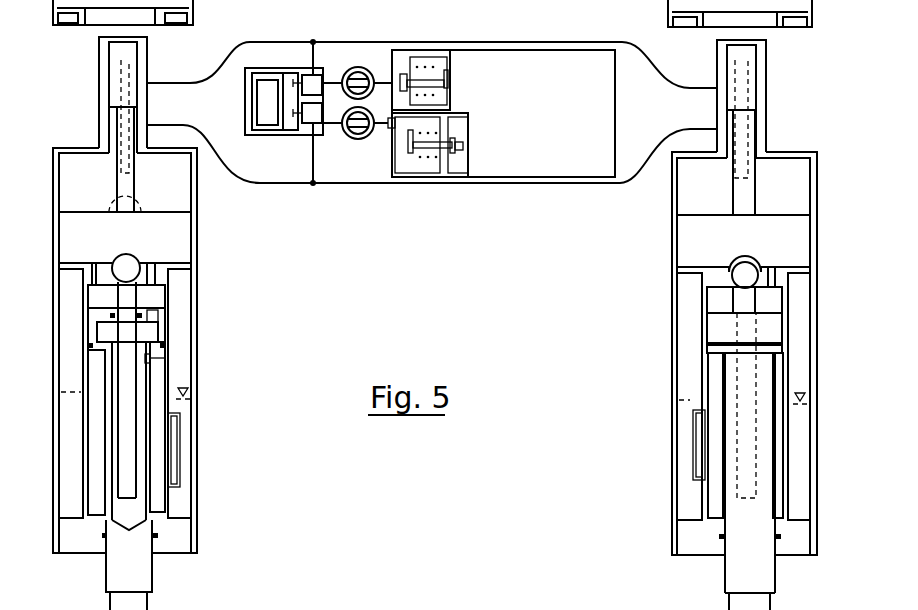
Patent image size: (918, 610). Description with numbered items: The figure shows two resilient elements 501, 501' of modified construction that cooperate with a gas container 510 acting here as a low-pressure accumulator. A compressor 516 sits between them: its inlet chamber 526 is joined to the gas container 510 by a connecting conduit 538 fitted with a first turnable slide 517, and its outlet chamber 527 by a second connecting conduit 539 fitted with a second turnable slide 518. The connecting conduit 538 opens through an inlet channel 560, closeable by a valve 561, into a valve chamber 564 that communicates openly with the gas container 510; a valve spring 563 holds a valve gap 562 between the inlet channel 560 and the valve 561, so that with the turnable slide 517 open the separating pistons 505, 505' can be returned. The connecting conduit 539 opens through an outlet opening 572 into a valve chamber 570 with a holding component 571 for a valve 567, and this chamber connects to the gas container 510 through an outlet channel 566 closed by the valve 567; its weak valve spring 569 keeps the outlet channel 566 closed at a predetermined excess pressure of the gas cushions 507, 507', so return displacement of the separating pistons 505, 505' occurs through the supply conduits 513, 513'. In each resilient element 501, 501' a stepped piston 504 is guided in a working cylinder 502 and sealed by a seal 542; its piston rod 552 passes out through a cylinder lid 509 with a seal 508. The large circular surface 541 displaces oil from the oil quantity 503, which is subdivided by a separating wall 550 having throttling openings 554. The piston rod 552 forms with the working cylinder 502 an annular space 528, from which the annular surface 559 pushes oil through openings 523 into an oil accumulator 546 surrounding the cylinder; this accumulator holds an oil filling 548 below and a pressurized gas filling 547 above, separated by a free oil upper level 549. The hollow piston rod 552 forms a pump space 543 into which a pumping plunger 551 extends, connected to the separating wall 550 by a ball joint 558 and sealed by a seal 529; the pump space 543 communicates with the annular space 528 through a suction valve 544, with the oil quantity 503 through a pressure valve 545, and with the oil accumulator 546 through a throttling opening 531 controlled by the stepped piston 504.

The resilient element 501 is at (183, 350).
The resilient element 501' is at (692, 353).
The working cylinder 502 is at (700, 368).
The oil quantity 503 is at (713, 260).
The stepped piston 504 is at (722, 327).
The separating piston 505 is at (156, 229).
The separating piston 505' is at (713, 241).
The gas cushion 507 is at (176, 133).
The gas cushion 507' is at (691, 130).
The seal 508 is at (718, 537).
The cylinder lid 509 is at (695, 547).
The gas container 510 is at (550, 158).
The supply conduit 513 is at (384, 120).
The supply conduit 513' is at (642, 129).
The compressor 516 is at (272, 102).
The first turnable slide 517 is at (372, 64).
The second turnable slide 518 is at (358, 140).
The openings 523 is at (168, 503).
The inlet chamber 526 is at (308, 82).
The outlet chamber 527 is at (307, 133).
The annular space 528 is at (158, 460).
The seal 529 is at (113, 313).
The throttling opening 531 is at (703, 422).
The connecting conduit 538 is at (333, 82).
The second connecting conduit 539 is at (333, 125).
The large circular surface 541 is at (720, 300).
The seal 542 is at (713, 347).
The pump space 543 is at (142, 445).
The suction valve 544 is at (147, 358).
The pressure valve 545 is at (155, 321).
The oil accumulator 546 is at (183, 382).
The gas filling 547 is at (692, 385).
The oil filling 548 is at (688, 500).
The free oil upper level 549 is at (705, 402).
The separating wall 550 is at (168, 271).
The pumping plunger 551 is at (128, 482).
The piston rod 552 is at (743, 572).
The throttling openings 554 is at (153, 279).
The ball joint 558 is at (128, 272).
The annular surface 559 is at (710, 353).
The inlet channel 560 is at (388, 77).
The valve 561 is at (425, 81).
The valve gap 562 is at (400, 76).
The valve spring 563 is at (444, 70).
The valve chamber 564 is at (403, 107).
The outlet channel 566 is at (465, 147).
The valve 567 is at (457, 138).
The valve spring 569 is at (418, 157).
The valve chamber 570 is at (403, 163).
The holding component 571 is at (458, 156).
The outlet opening 572 is at (388, 128).